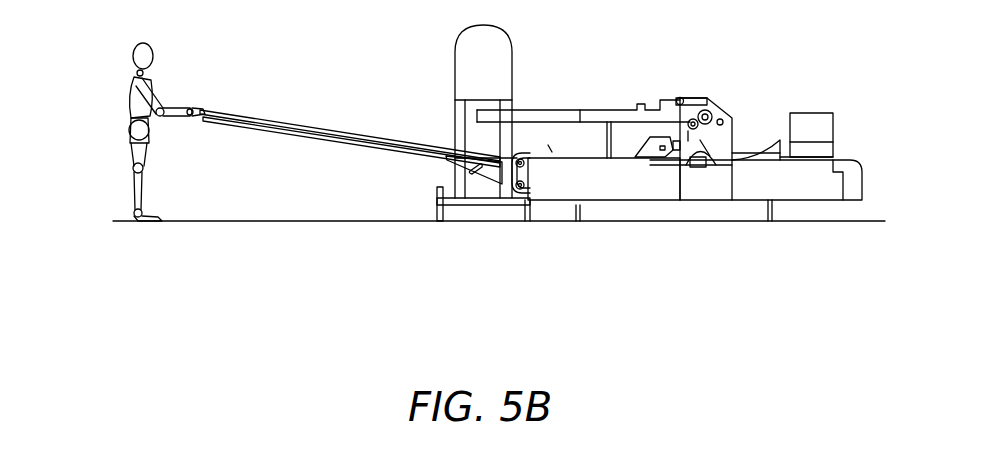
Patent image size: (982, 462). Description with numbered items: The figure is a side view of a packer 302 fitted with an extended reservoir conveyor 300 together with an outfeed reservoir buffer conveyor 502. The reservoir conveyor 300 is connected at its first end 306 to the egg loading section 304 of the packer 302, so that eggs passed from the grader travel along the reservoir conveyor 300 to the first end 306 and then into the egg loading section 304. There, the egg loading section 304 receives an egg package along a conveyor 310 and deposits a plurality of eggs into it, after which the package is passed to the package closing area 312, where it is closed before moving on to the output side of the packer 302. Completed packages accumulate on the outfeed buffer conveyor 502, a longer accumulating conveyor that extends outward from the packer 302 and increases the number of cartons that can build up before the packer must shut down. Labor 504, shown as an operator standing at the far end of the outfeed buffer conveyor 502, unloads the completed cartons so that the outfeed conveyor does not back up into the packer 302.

The reservoir conveyor 300 is at (537, 117).
The packer 302 is at (828, 190).
The egg loading section 304 is at (697, 98).
The first end 306 is at (600, 110).
The conveyor 310 is at (748, 162).
The package closing area 312 is at (563, 150).
The outfeed reservoir buffer conveyor 502 is at (350, 147).
The labor 504 is at (137, 153).